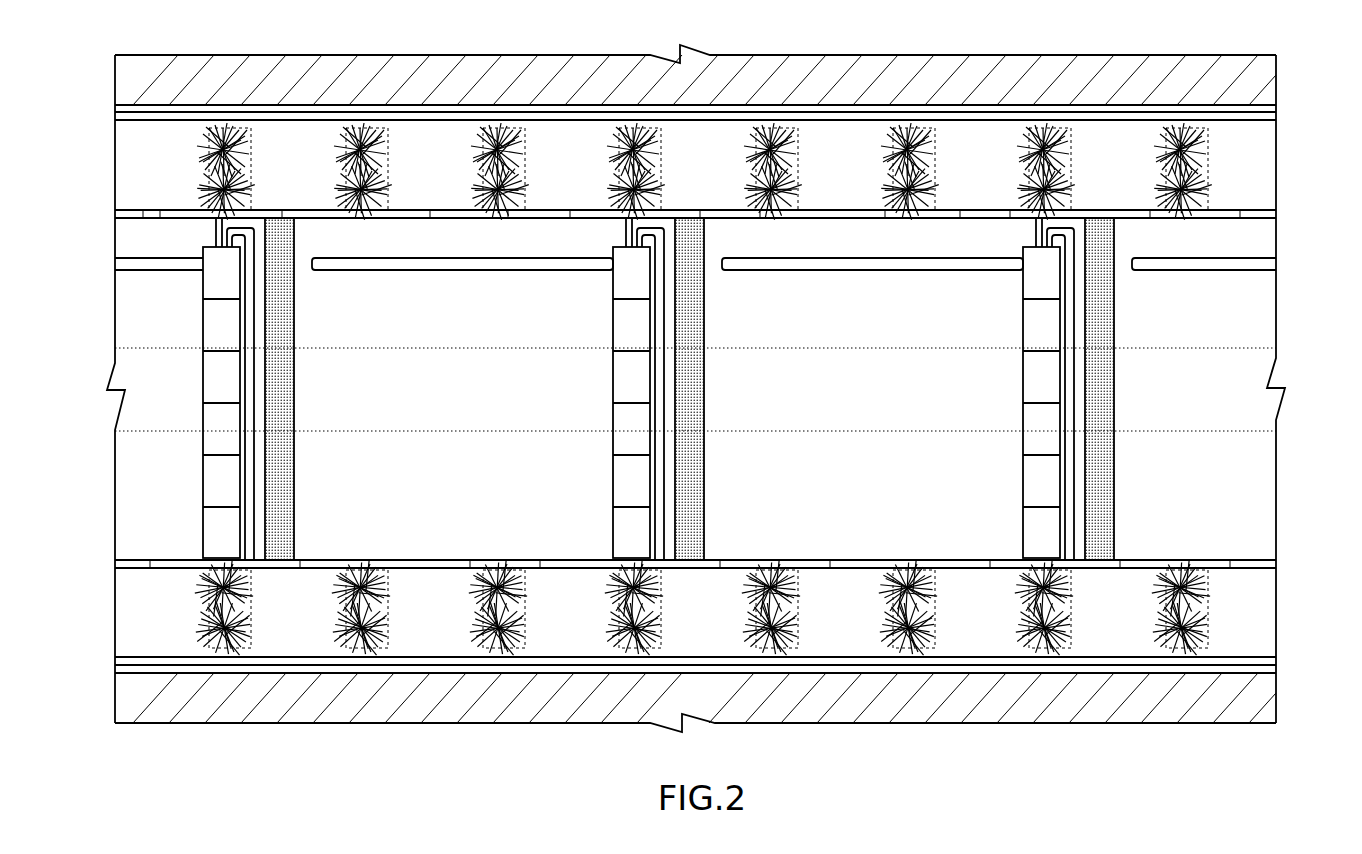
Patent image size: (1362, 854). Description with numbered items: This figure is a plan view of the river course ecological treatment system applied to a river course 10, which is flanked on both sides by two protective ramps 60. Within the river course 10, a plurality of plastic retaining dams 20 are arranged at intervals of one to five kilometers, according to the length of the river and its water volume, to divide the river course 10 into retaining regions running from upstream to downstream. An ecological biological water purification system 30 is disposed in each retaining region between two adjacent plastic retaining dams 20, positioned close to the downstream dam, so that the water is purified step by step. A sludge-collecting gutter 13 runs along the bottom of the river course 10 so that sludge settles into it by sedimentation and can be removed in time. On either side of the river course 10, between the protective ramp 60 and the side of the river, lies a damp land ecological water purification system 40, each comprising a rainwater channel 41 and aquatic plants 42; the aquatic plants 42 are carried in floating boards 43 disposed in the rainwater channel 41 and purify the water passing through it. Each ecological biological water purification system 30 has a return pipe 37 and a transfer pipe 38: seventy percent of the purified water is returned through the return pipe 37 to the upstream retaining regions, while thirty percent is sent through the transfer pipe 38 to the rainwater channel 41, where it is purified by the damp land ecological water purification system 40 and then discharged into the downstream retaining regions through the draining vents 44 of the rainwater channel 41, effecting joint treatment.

The river course 10 is at (1256, 317).
The sludge-collecting gutter 13 is at (1260, 412).
The plastic retaining dam 20 is at (273, 560).
The ecological biological water purification system 30 is at (205, 538).
The return pipe 37 is at (443, 262).
The transfer pipe 38 is at (653, 235).
The damp land ecological water purification system 40 is at (1283, 188).
The rainwater channel 41 is at (1258, 137).
The aquatic plants 42 is at (1203, 390).
The floating board 43 is at (1200, 128).
The draining vent 44 is at (973, 213).
The protective ramp 60 is at (770, 70).